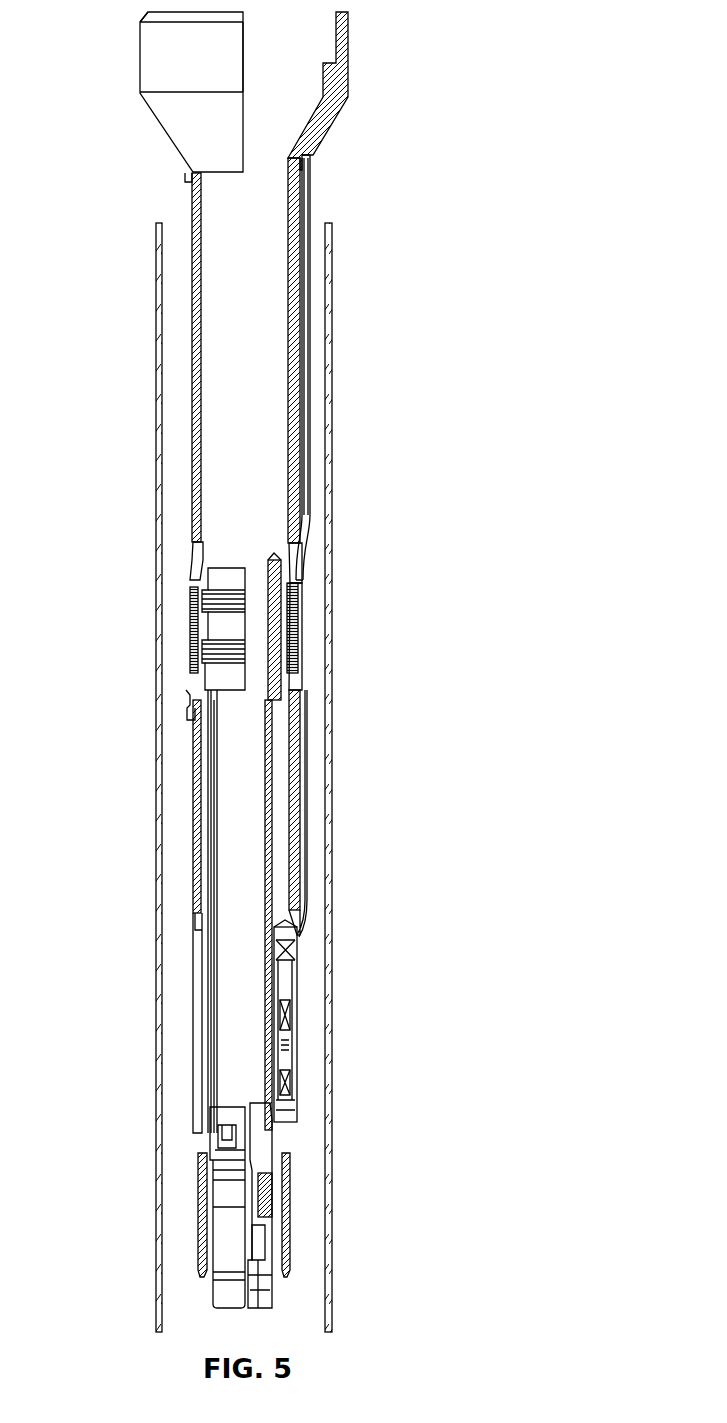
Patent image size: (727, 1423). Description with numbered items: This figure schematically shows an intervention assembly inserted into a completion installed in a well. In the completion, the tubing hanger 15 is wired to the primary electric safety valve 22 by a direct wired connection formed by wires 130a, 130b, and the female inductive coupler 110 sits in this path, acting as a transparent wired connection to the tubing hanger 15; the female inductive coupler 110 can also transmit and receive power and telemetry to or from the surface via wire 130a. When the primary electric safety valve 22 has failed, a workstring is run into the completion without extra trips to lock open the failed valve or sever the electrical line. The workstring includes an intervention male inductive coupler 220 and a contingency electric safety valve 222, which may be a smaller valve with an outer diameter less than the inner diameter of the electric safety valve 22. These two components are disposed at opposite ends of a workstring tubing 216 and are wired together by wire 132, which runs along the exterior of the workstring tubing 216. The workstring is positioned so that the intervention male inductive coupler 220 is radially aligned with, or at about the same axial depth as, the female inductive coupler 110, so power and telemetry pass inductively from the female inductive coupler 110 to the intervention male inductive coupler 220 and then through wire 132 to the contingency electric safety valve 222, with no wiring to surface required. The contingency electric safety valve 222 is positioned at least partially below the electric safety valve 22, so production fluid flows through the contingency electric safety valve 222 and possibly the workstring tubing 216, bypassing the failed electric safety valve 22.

The tubing hanger 15 is at (115, 57).
The wire 130a is at (310, 328).
The intervention male inductive coupler 220 is at (223, 578).
The female inductive coupler 110 is at (188, 630).
The wire 132 is at (203, 803).
The wire 130b is at (307, 758).
The workstring tubing 216 is at (268, 852).
The electric safety valve 22 is at (300, 1045).
The contingency electric safety valve 222 is at (274, 1208).